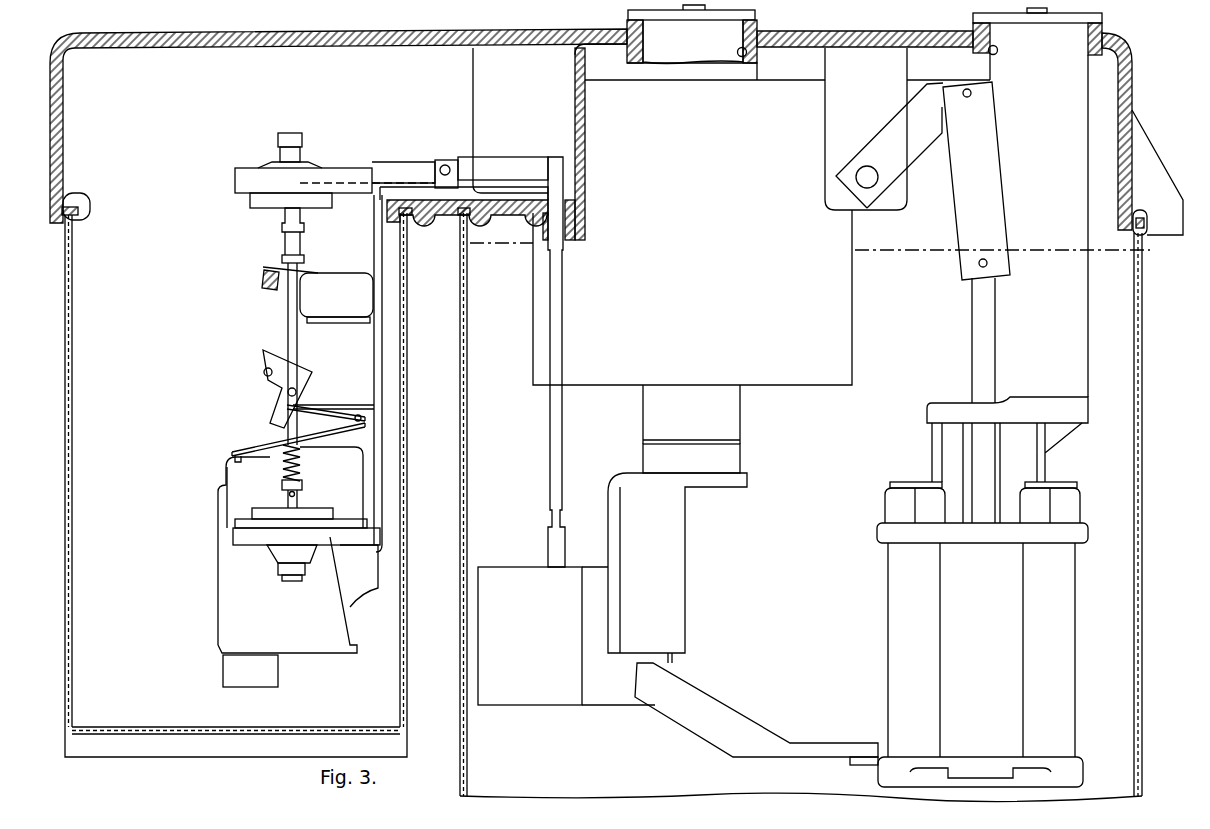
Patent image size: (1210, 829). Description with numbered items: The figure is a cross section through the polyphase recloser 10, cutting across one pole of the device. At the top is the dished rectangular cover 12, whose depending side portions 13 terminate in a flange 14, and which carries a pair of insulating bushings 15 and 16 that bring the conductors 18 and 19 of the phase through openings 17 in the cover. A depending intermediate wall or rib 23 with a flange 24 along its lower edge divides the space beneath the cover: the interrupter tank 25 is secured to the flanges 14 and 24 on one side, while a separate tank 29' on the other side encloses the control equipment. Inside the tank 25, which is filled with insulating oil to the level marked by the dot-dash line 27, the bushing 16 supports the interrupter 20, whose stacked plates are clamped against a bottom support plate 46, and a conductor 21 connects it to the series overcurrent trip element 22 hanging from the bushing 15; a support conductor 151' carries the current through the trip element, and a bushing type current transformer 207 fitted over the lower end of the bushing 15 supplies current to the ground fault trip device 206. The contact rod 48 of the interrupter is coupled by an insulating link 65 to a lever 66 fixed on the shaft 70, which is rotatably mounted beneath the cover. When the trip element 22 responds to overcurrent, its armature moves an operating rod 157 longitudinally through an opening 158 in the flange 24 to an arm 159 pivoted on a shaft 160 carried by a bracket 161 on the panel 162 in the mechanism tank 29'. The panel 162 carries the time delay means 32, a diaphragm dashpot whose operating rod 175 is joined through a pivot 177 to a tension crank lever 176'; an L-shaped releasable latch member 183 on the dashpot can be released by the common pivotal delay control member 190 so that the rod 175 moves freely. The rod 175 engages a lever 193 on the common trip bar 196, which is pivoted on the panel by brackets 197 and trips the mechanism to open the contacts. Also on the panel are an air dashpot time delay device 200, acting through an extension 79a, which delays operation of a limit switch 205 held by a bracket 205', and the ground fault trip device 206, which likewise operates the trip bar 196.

The polyphase recloser 10 is at (442, 353).
The cover 12 is at (235, 33).
The depending side portions 13 is at (1124, 88).
The flange 14 is at (88, 212).
The insulating bushing 15 is at (757, 15).
The insulating bushing 16 is at (1103, 22).
The openings 17 is at (749, 54).
The conductor 18 is at (640, 7).
The conductor 19 is at (1027, 11).
The interrupter 20 is at (873, 648).
The conductor 21 is at (740, 722).
The overcurrent trip element 22 is at (542, 658).
The intermediate wall or rib 23 is at (577, 99).
The flange 24 is at (464, 212).
The interrupter tank 25 is at (1142, 349).
The oil level line 27 is at (893, 250).
The separate tank 29' is at (219, 485).
The time delay means 32 is at (253, 335).
The bottom support plate 46 is at (878, 780).
The contact rod 48 is at (972, 350).
The insulating link 65 is at (960, 221).
The lever 66 is at (905, 121).
The shaft 70 is at (872, 169).
The stop 79a is at (262, 277).
The support conductor 151' is at (677, 524).
The operating rod 157 is at (550, 435).
The opening 158 is at (575, 224).
The arm 159 is at (538, 160).
The shaft 160 is at (448, 165).
The bracket 161 is at (433, 162).
The panel 162 is at (383, 452).
The operating rod 175 is at (287, 305).
The arm 176' is at (367, 159).
The pivot 177 is at (301, 162).
The releasable latch member 183 is at (265, 355).
The delay control member 190 is at (264, 375).
The lever 193 is at (320, 408).
The trip bar 196 is at (300, 442).
The brackets 197 is at (383, 411).
The air dashpot time delay device 200 is at (272, 167).
The limit switch 205 is at (336, 282).
The bracket 205' is at (338, 334).
The ground fault trip device 206 is at (220, 612).
The bushing type current transformer 207 is at (852, 332).